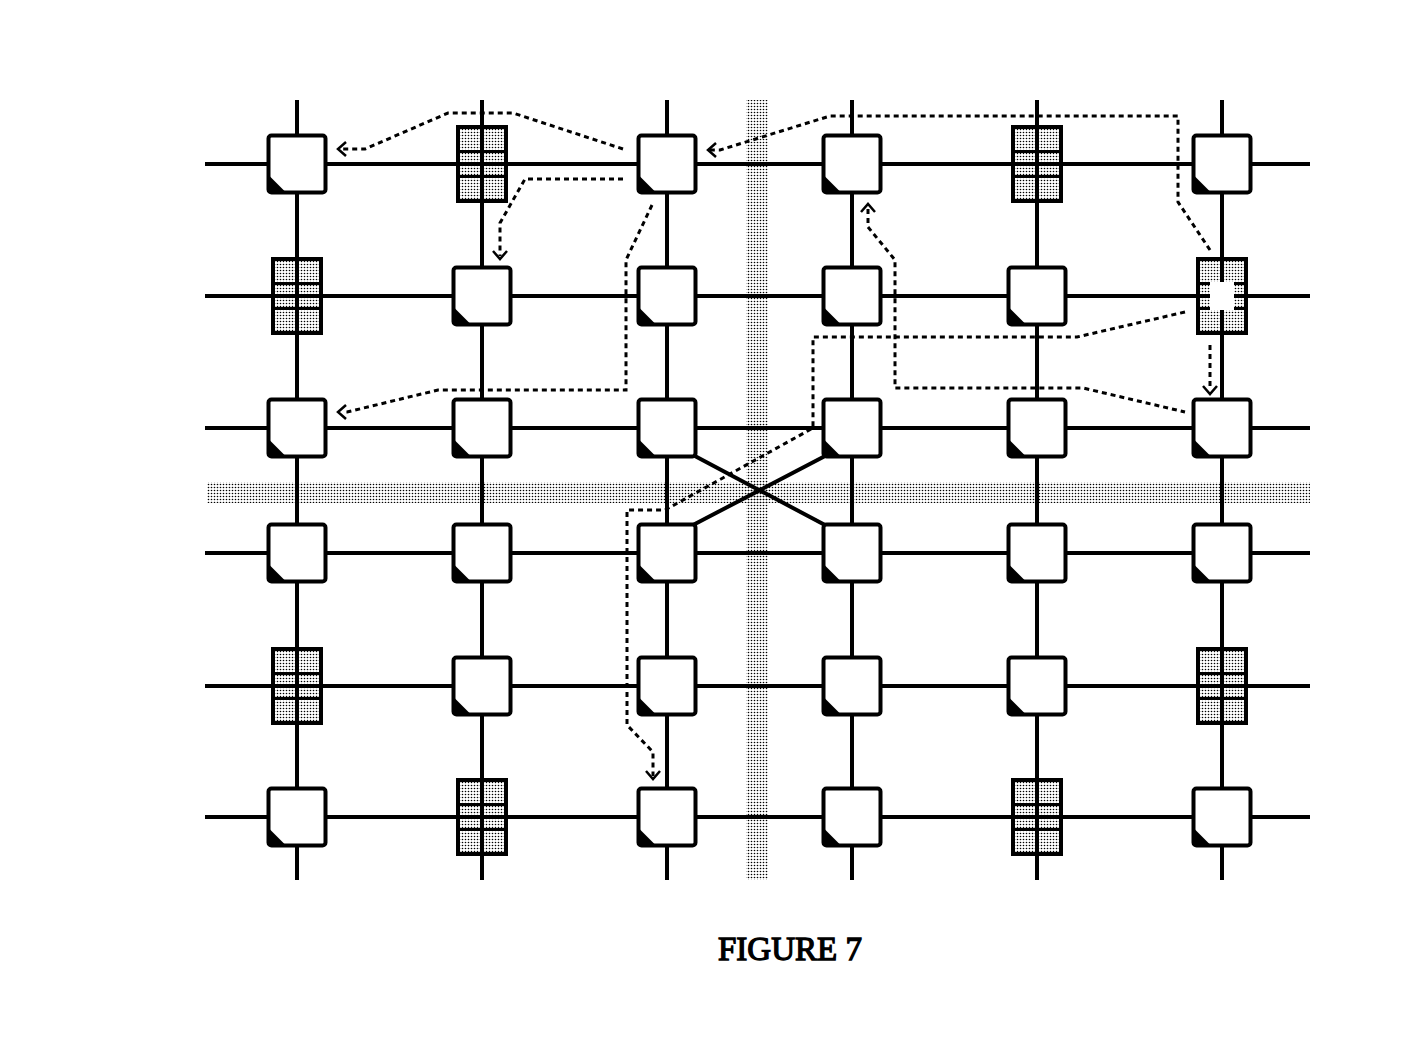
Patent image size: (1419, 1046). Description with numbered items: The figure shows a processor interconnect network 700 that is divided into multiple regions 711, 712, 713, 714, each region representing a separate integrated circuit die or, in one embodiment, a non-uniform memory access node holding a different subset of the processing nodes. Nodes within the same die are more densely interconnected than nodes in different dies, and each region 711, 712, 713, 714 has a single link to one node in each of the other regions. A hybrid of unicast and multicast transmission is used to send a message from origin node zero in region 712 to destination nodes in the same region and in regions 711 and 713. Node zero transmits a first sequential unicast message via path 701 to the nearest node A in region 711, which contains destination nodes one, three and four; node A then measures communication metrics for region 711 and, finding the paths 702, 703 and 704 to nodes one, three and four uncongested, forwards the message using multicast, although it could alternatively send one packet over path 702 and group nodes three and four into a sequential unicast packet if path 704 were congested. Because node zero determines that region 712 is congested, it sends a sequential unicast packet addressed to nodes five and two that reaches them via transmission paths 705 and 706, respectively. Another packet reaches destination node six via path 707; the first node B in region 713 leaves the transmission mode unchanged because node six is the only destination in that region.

The processor interconnect network 700 is at (1188, 66).
The path 701 is at (927, 115).
The path 702 is at (547, 123).
The path 703 is at (512, 211).
The path 704 is at (430, 392).
The transmission path 705 is at (1207, 367).
The transmission path 706 is at (930, 386).
The path 707 is at (622, 615).
The region 711 is at (188, 112).
The region 712 is at (1317, 121).
The region 713 is at (188, 833).
The region 714 is at (1317, 842).